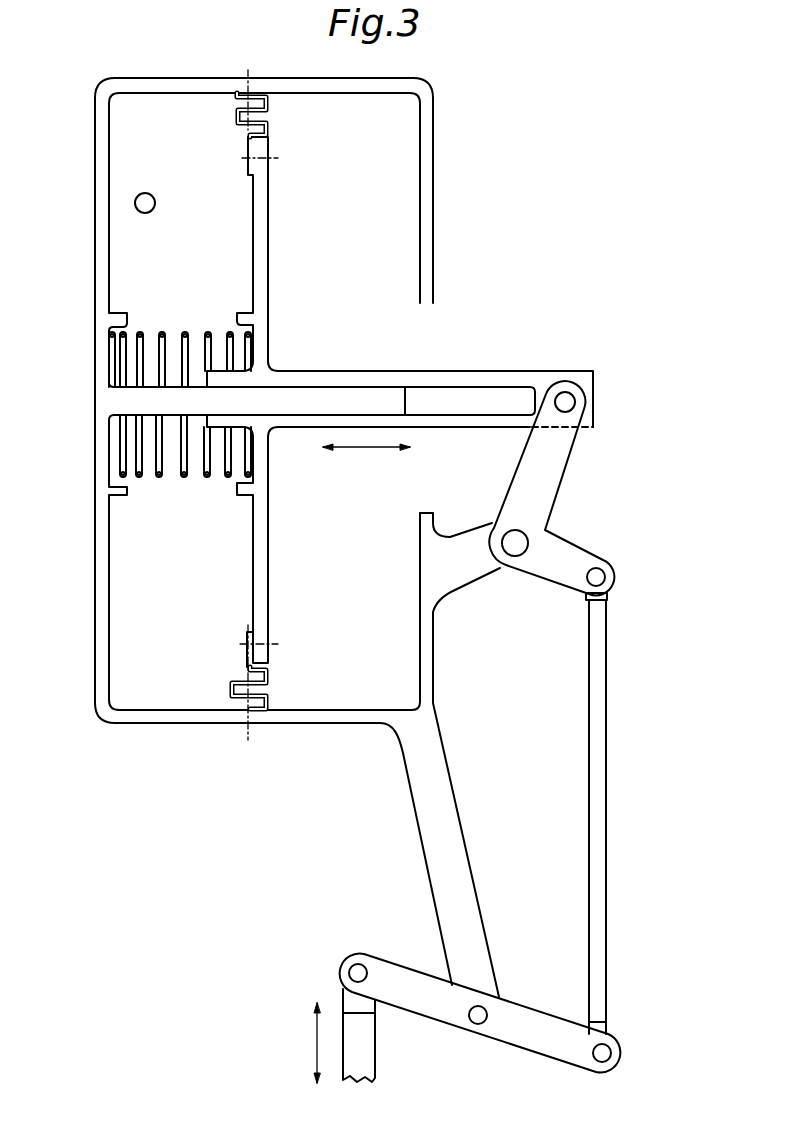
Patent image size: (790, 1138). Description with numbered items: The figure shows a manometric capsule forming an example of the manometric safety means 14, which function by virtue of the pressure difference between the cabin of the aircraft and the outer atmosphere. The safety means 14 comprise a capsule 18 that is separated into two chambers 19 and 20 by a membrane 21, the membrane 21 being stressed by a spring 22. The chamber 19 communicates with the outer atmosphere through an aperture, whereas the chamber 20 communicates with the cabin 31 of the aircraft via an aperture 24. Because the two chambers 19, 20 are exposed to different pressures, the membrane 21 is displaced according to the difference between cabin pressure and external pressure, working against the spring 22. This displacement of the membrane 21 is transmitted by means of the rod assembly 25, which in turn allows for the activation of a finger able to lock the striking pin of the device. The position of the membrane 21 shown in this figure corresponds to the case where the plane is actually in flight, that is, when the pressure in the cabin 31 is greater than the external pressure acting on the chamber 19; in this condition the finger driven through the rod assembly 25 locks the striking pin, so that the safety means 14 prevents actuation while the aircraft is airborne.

The manometric safety means 14 is at (602, 208).
The capsule 18 is at (190, 724).
The chamber 19 is at (120, 612).
The chamber 20 is at (333, 663).
The membrane 21 is at (263, 557).
The spring 22 is at (182, 462).
The aperture 24 is at (407, 347).
The rod assembly 25 is at (622, 752).
The cabin 31 is at (698, 386).